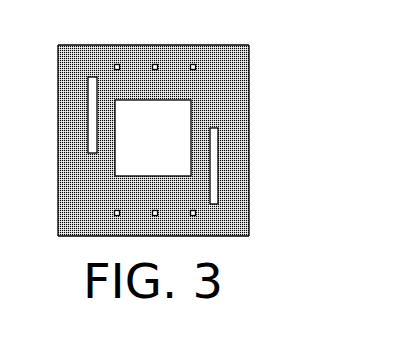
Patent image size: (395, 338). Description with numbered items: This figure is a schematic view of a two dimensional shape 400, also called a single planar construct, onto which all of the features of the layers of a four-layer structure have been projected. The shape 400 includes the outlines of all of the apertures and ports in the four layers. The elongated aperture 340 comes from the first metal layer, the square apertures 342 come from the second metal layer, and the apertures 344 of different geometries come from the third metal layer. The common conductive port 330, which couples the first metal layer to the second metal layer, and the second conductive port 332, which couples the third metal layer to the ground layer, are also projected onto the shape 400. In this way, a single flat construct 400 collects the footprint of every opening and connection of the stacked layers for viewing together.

The two dimensional shape 400 is at (207, 45).
The common conductive port 330 is at (248, 140).
The second conductive port 332 is at (58, 140).
The elongated aperture 340 is at (88, 107).
The square apertures 342 is at (193, 64).
The apertures 344 is at (193, 216).